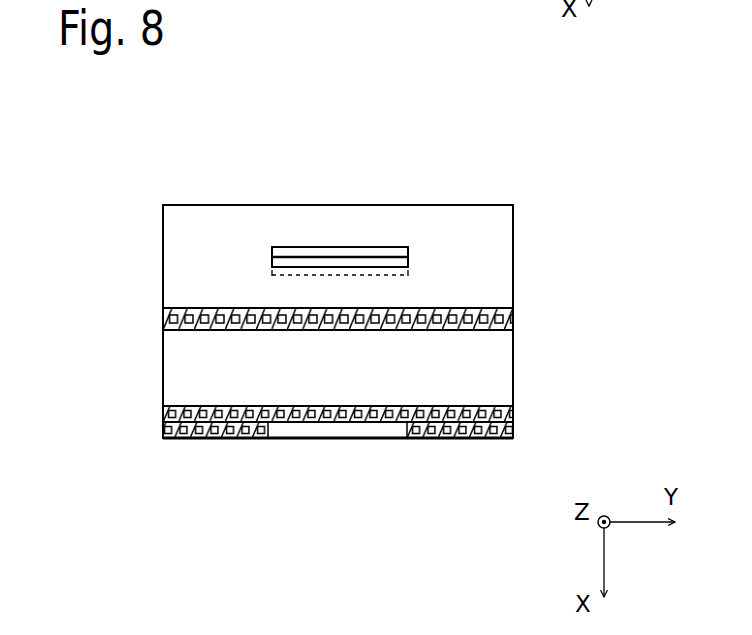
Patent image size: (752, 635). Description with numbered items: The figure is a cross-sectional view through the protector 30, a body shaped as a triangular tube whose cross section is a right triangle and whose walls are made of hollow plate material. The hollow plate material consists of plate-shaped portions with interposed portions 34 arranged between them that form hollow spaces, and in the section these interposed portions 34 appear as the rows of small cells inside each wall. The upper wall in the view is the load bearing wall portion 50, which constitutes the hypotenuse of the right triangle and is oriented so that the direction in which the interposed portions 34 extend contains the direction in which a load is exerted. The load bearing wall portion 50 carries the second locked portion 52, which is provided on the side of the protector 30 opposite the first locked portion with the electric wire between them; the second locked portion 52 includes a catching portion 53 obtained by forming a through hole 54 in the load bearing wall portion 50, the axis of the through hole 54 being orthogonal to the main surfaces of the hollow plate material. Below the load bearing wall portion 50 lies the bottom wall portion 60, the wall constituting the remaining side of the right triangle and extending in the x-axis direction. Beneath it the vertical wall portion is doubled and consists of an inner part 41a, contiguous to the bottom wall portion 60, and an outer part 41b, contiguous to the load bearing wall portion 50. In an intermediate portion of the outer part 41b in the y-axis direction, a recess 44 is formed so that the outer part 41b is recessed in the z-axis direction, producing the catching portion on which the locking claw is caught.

The protector 30 is at (237, 160).
The load bearing wall portion 50 is at (492, 256).
The second locked portion 52 is at (320, 265).
The catching portion 53 is at (340, 210).
The through hole 54 is at (365, 258).
The bottom wall portion 60 is at (492, 356).
The inner part 41a is at (477, 407).
The outer part 41b is at (478, 438).
The recess 44 is at (270, 428).
The interposed portions 34 is at (434, 318).